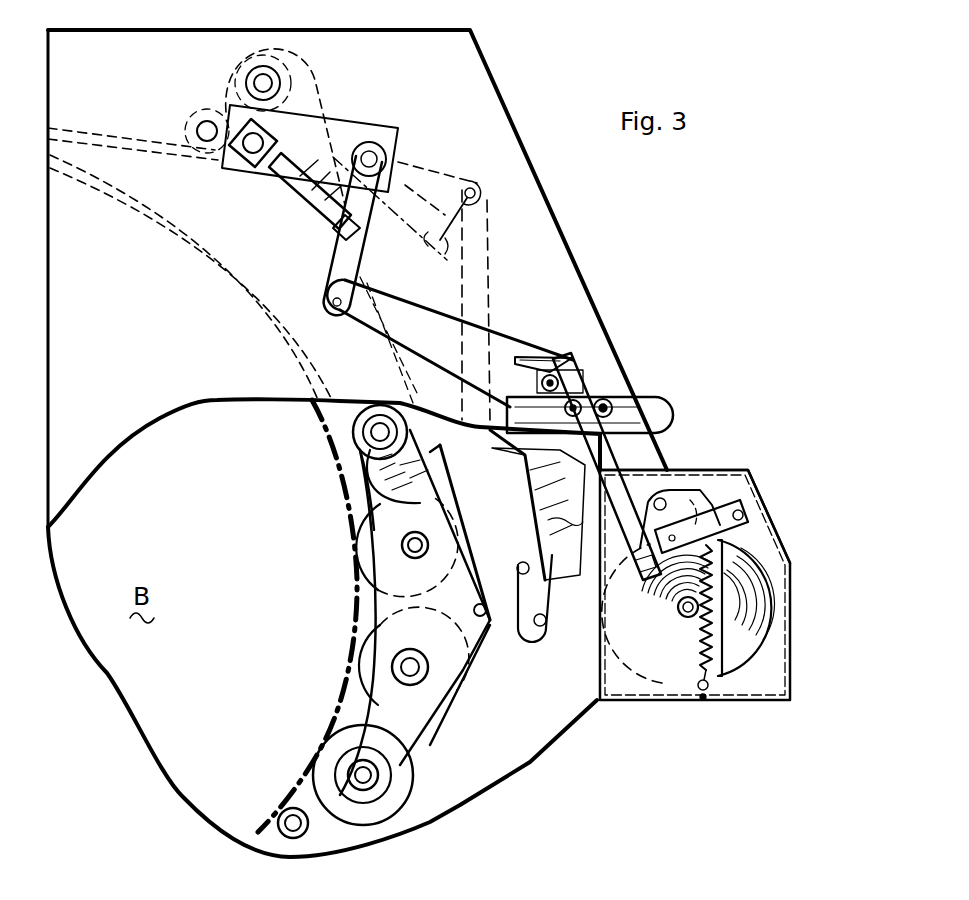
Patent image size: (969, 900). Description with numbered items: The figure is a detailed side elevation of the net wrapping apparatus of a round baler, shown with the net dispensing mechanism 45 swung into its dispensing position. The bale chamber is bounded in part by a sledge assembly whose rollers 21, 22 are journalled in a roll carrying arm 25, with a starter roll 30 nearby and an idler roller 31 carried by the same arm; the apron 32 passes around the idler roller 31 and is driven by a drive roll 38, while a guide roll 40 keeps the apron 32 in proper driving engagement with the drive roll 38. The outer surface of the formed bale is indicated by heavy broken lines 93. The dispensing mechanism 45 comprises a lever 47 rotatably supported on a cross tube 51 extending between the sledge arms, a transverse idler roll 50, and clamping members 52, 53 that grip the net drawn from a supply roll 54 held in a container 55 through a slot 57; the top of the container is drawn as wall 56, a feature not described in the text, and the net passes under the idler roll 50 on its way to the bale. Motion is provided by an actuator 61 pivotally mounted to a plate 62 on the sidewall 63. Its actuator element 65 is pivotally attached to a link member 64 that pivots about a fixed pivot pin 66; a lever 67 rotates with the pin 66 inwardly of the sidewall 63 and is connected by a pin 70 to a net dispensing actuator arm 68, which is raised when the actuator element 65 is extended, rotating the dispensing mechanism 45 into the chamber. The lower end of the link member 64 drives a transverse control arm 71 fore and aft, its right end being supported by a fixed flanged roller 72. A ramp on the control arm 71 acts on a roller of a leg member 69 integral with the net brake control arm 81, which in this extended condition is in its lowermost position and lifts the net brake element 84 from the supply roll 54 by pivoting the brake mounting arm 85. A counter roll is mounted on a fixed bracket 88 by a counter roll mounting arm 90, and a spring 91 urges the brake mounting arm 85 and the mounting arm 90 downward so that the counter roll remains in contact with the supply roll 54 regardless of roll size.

The roller 21 is at (368, 540).
The roller 22 is at (360, 655).
The roll carrying arm 25 is at (322, 750).
The starter roll 30 is at (282, 830).
The idler roller 31 is at (350, 420).
The apron 32 is at (100, 178).
The drive roll 38 is at (250, 58).
The guide roll 40 is at (200, 112).
The net dispensing mechanism 45 is at (462, 540).
The lever 47 is at (503, 630).
The idler roll 50 is at (515, 630).
The cross tube 51 is at (474, 608).
The clamping member 52 is at (340, 468).
The clamping member 53 is at (360, 512).
The supply roll 54 is at (765, 605).
The container 55 is at (790, 655).
The housing top wall 56 is at (758, 478).
The slot 57 is at (500, 515).
The actuator 61 is at (268, 168).
The plate 62 is at (338, 125).
The sidewall 63 is at (471, 120).
The link member 64 is at (355, 260).
The actuator element 65 is at (312, 218).
The pivot pin 66 is at (372, 150).
The lever 67 is at (427, 165).
The net dispensing actuator arm 68 is at (485, 272).
The leg member 69 is at (545, 372).
The pin 70 is at (478, 192).
The control arm 71 is at (400, 330).
The flanged roller 72 is at (592, 378).
The net brake control arm 81 is at (665, 432).
The net brake element 84 is at (740, 520).
The brake mounting arm 85 is at (692, 675).
The fixed bracket 88 is at (646, 634).
The counter roll mounting arm 90 is at (670, 495).
The spring 91 is at (706, 690).
The heavy broken lines 93 is at (340, 488).